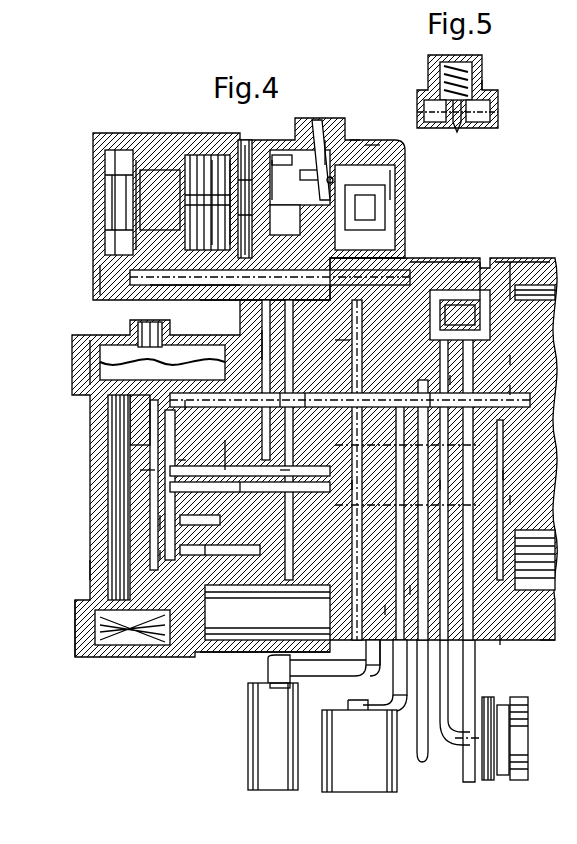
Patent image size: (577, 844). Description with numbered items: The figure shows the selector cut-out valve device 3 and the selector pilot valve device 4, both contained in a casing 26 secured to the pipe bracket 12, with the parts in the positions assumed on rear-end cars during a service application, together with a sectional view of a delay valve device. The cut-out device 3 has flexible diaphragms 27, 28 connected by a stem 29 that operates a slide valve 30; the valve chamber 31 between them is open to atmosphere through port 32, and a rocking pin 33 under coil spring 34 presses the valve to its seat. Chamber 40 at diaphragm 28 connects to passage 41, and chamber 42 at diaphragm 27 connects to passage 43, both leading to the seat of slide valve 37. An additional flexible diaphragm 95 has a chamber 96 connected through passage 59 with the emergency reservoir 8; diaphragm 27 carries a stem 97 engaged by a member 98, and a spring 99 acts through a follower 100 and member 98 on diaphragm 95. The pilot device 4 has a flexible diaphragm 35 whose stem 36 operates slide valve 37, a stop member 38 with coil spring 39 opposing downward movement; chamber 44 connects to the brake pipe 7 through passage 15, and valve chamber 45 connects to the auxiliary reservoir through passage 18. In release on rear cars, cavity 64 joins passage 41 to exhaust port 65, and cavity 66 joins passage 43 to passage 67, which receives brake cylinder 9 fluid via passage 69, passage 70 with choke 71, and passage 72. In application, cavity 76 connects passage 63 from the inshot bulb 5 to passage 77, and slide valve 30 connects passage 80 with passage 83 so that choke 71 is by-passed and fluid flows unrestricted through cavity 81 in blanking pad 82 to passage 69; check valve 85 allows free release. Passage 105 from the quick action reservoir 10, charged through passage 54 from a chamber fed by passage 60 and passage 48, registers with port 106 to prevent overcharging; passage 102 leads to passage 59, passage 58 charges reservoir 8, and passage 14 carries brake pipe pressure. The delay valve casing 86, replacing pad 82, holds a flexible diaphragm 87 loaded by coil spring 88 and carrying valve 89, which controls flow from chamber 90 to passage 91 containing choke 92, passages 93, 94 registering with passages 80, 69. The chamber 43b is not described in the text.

In FIG. 4, the chamber 96 is at (112, 152).
In FIG. 4, the flexible diaphragm 95 is at (118, 150).
In FIG. 4, the member 98 is at (138, 160).
In FIG. 4, the follower 100 is at (160, 172).
In FIG. 4, the stem 97 is at (200, 158).
In FIG. 4, the spring 99 is at (212, 160).
In FIG. 4, the chamber 42 is at (232, 160).
In FIG. 4, the flexible diaphragm 27 is at (250, 160).
In FIG. 4, the port 32 is at (272, 160).
In FIG. 4, the valve chamber 31 is at (318, 125).
In FIG. 4, the rocking pin 33 is at (325, 140).
In FIG. 4, the selector cut-out valve device 3 is at (359, 135).
In FIG. 4, the coil spring 34 is at (370, 148).
In FIG. 4, the stem 29 is at (283, 176).
In FIG. 4, the slide valve 30 is at (329, 187).
In FIG. 4, the flexible diaphragm 28 is at (395, 182).
In FIG. 4, the chamber 40 is at (375, 215).
In FIG. 4, the passage 41 is at (390, 262).
In FIG. 4, the blanking pad 82 is at (470, 262).
In FIG. 4, the pipe bracket 12 is at (520, 260).
In FIG. 4, the choke 71 is at (488, 264).
In FIG. 4, the cavity 81 is at (450, 300).
In FIG. 4, the passage 91 is at (520, 272).
In FIG. 4, the passage 59 is at (108, 276).
In FIG. 4, the flexible diaphragm 35 is at (95, 348).
In FIG. 4, the passage 43 is at (168, 300).
In FIG. 4, the chamber 44 is at (220, 300).
In FIG. 4, the casing 26 is at (268, 340).
In FIG. 4, the passage 83 is at (345, 345).
In FIG. 4, the passage 15 is at (292, 390).
In FIG. 4, the check valve 85 is at (317, 390).
In FIG. 4, the passage 80 is at (429, 390).
In FIG. 4, the passage 69 is at (455, 380).
In FIG. 4, the passage 70 is at (523, 350).
In FIG. 4, the passage 18 is at (525, 382).
In FIG. 4, the choke 92 is at (460, 315).
In FIG. 4, the passage 77 is at (282, 470).
In FIG. 4, the passage 67 is at (242, 487).
In FIG. 4, the port 106 is at (197, 452).
In FIG. 4, the passage 63 is at (237, 455).
In FIG. 4, the passage 105 is at (358, 480).
In FIG. 4, the passage 14 is at (425, 474).
In FIG. 4, the passage 58 is at (516, 469).
In FIG. 4, the passage 72 is at (527, 492).
In FIG. 4, the stem 36 is at (120, 442).
In FIG. 4, the slide valve 37 is at (150, 475).
In FIG. 4, the valve chamber 45 is at (118, 490).
In FIG. 4, the cavity 64 is at (165, 520).
In FIG. 4, the cavity 66 is at (165, 555).
In FIG. 4, the exhaust port 65 is at (207, 548).
In FIG. 4, the selector pilot valve device 4 is at (82, 574).
In FIG. 4, the stop member 38 is at (80, 604).
In FIG. 4, the coil spring 39 is at (138, 632).
In FIG. 4, the chamber 43b is at (267, 612).
In FIG. 4, the inshot bulb 5 is at (248, 618).
In FIG. 4, the quick action reservoir 10 is at (262, 735).
In FIG. 4, the emergency reservoir 8 is at (345, 735).
In FIG. 4, the brake pipe 7 is at (468, 760).
In FIG. 4, the brake cylinder 9 is at (515, 712).
In FIG. 4, the passage 102 is at (505, 646).
In FIG. 4, the passage 48 is at (548, 642).
In FIG. 4, the passage 54 is at (391, 599).
In FIG. 4, the passage 60 is at (415, 579).
In FIG. 4, the cavity 76 is at (186, 396).
In FIG. 5, the coil spring 88 is at (430, 72).
In FIG. 5, the flexible diaphragm 87 is at (478, 70).
In FIG. 5, the casing 86 is at (496, 92).
In FIG. 5, the passage 93 is at (422, 112).
In FIG. 5, the passage 94 is at (492, 112).
In FIG. 5, the valve 89 is at (455, 128).
In FIG. 5, the chamber 90 is at (468, 120).